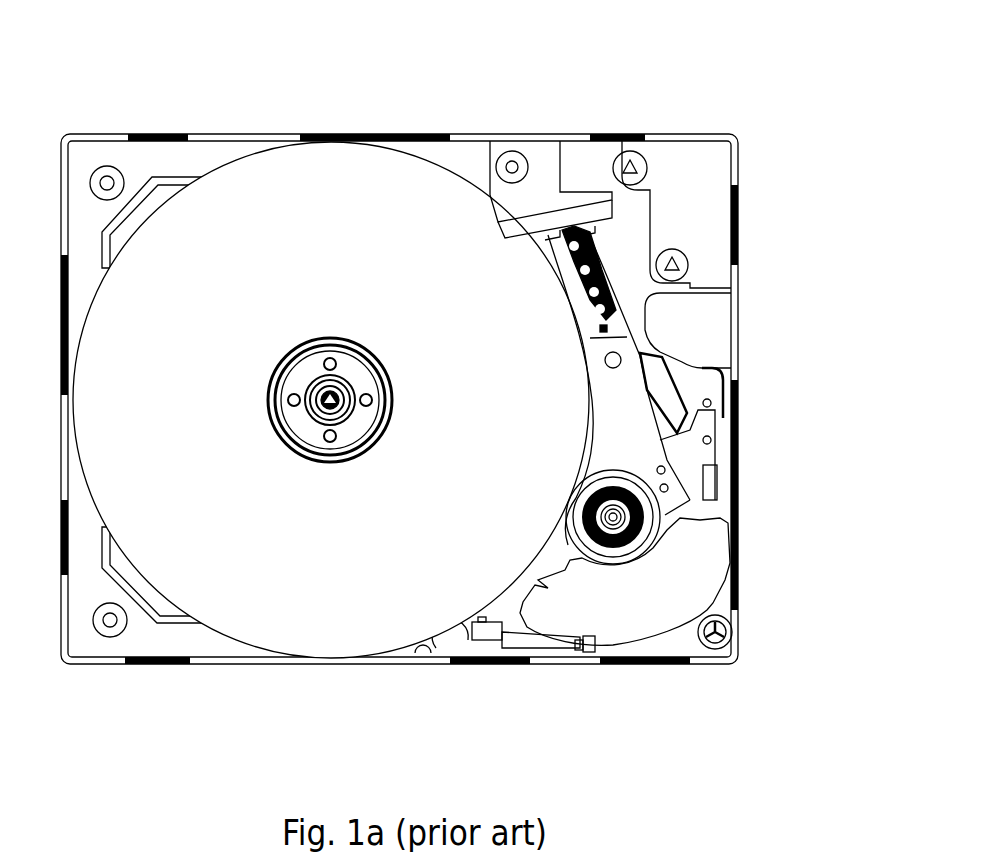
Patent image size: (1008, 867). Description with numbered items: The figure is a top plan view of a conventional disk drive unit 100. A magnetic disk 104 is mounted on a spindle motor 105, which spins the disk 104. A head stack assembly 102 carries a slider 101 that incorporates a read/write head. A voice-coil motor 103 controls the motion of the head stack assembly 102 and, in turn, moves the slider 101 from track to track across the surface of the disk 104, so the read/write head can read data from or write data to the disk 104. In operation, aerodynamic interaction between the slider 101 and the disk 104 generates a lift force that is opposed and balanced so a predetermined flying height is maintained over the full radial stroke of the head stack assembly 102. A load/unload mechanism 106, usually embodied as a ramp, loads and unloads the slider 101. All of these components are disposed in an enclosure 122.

The disk drive unit 100 is at (474, 397).
The slider 101 is at (570, 275).
The head stack assembly 102 is at (630, 430).
The voice-coil motor 103 is at (706, 577).
The magnetic disk 104 is at (300, 182).
The spindle motor 105 is at (354, 421).
The load/unload mechanism 106 is at (540, 165).
The enclosure 122 is at (740, 660).